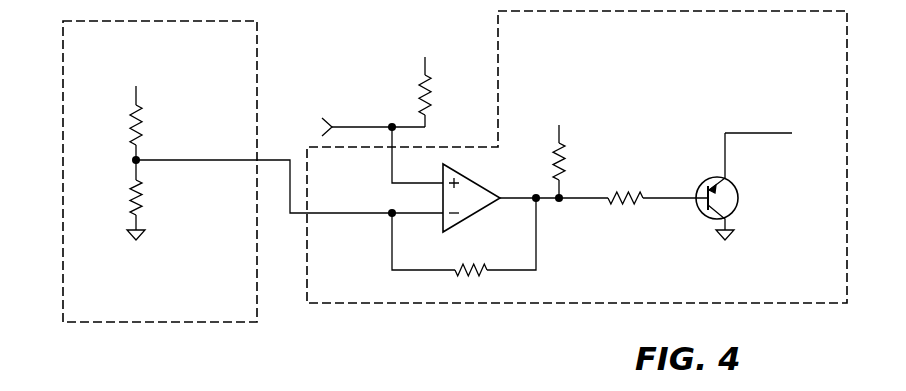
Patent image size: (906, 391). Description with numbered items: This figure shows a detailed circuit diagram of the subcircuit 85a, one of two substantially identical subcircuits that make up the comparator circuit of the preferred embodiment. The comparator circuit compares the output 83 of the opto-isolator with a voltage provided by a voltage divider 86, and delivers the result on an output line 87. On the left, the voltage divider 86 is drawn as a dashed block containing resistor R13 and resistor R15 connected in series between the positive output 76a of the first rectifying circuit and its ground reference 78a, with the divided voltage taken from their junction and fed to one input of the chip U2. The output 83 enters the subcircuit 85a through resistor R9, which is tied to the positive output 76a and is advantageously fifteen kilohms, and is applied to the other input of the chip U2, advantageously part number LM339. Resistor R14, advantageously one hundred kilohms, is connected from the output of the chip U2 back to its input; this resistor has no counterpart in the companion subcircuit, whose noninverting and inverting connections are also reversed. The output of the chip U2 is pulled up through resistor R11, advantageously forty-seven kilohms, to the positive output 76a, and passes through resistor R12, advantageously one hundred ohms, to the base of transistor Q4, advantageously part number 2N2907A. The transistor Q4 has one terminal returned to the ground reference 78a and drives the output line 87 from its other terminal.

The voltage divider 86 is at (60, 176).
The subcircuit 85a is at (577, 157).
The positive output 76a is at (351, 89).
The ground reference 78a is at (430, 248).
The output 83 is at (358, 126).
The output line 87 is at (760, 131).
The resistor R9 is at (437, 101).
The resistor R11 is at (569, 170).
The resistor R12 is at (658, 186).
The resistor R13 is at (150, 124).
The resistor R14 is at (464, 237).
The resistor R15 is at (150, 195).
The chip U2 is at (500, 179).
The transistor Q4 is at (732, 181).